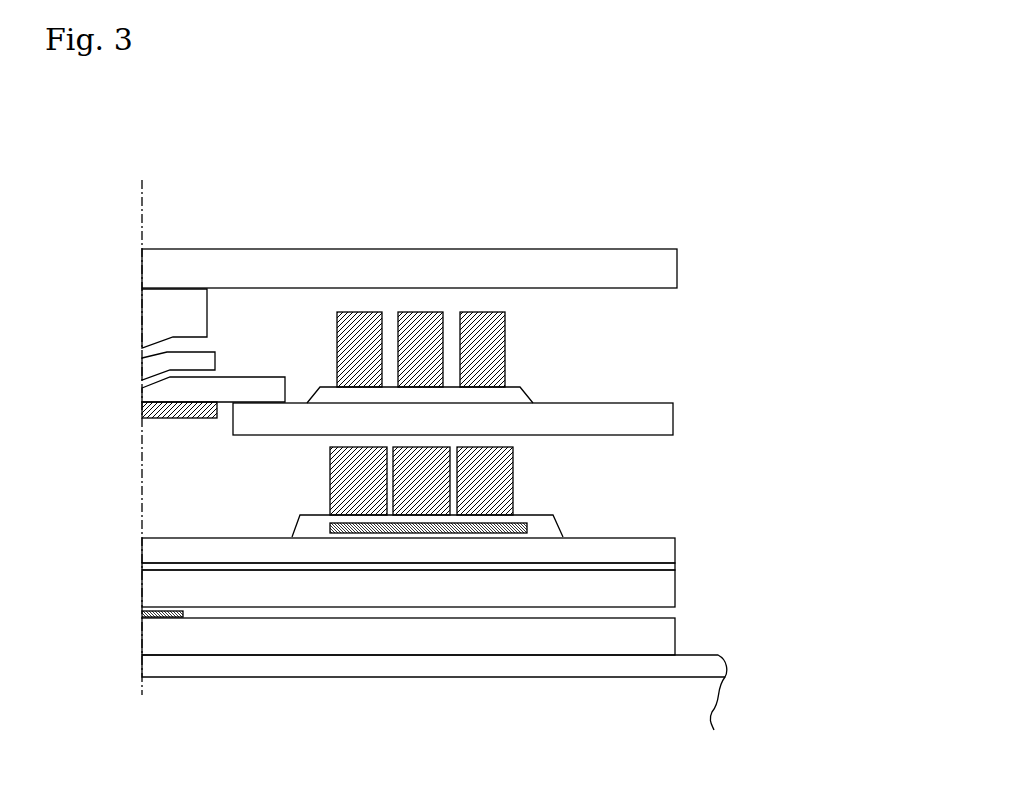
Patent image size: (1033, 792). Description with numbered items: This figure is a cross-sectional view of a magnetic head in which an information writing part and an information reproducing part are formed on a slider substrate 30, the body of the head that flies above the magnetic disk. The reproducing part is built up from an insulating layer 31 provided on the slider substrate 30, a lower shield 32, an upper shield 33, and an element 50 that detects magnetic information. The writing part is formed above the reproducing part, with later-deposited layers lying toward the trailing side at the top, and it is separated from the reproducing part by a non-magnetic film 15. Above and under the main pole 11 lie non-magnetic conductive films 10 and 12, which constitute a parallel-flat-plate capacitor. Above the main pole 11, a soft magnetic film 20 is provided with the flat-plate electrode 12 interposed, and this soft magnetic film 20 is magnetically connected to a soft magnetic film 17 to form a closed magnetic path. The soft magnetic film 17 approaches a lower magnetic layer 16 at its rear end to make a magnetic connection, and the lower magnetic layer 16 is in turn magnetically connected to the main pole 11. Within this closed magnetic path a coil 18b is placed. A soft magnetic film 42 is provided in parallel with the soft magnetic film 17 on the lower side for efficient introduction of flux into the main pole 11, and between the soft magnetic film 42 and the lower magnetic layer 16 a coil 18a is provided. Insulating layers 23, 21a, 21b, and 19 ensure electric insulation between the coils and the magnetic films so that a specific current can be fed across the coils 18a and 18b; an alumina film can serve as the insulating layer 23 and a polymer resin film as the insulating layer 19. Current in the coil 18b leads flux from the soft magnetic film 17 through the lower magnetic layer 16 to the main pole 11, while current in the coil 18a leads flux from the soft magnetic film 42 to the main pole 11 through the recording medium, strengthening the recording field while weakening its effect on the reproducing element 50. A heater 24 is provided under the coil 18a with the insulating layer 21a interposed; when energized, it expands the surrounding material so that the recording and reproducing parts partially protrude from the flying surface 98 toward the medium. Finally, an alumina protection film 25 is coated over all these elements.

The flying surface 98 is at (134, 227).
The protection film 25 is at (243, 218).
The soft magnetic film 17 is at (553, 249).
The soft magnetic film 20 is at (142, 313).
The non-magnetic conductive film 12 is at (142, 368).
The main pole 11 is at (142, 387).
The non-magnetic conductive film 10 is at (142, 413).
The insulating layer 19 is at (324, 326).
The coil 18b is at (507, 337).
The insulating layer 21b is at (528, 385).
The lower magnetic layer 16 is at (673, 417).
The coil 18a is at (513, 472).
The insulating layer 23 is at (199, 518).
The insulating layer 21a is at (565, 528).
The heater 24 is at (403, 535).
The soft magnetic film 42 is at (675, 550).
The non-magnetic film 15 is at (195, 567).
The upper shield 33 is at (675, 585).
The element 50 is at (157, 615).
The lower shield 32 is at (675, 635).
The insulating layer 31 is at (640, 677).
The slider substrate 30 is at (557, 722).